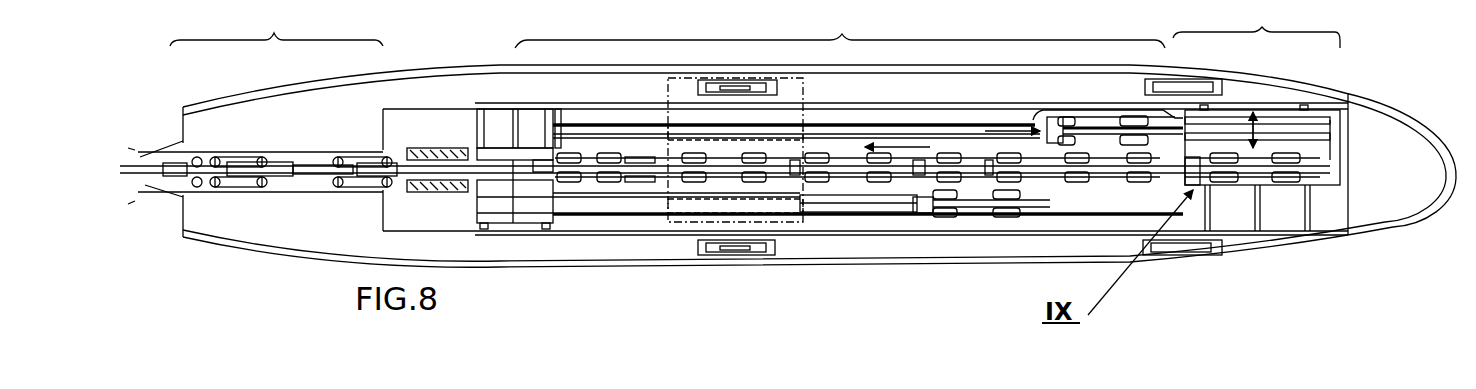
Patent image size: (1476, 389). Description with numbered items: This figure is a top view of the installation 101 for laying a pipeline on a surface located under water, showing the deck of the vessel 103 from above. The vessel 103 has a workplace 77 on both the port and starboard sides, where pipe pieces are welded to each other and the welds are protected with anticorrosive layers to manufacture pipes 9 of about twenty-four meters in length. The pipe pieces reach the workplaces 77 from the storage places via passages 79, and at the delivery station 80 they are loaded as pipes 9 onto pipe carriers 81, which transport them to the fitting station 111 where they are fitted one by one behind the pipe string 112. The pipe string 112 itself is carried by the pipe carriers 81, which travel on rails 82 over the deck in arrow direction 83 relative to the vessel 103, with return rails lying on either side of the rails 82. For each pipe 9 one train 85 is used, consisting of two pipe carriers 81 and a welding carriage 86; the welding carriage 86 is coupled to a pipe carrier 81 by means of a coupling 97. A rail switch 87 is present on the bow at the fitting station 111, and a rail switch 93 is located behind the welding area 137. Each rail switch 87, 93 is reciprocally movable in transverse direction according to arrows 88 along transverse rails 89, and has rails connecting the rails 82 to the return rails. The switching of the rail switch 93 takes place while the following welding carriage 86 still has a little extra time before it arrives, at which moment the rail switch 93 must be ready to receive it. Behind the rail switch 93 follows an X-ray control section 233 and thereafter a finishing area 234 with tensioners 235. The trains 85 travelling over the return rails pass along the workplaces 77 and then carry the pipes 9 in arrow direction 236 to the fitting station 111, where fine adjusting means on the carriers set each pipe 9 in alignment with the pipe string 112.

The pipe 9 is at (1082, 170).
The workplace 77 is at (806, 96).
The passage 79 is at (780, 86).
The delivery station 80 is at (690, 122).
The pipe carrier 81 is at (607, 153).
The rails 82 is at (644, 155).
The arrow direction 83 is at (893, 145).
The train 85 is at (1118, 120).
The welding carriage 86 is at (548, 158).
The rail switch 87 is at (1276, 118).
The arrows 88 is at (500, 205).
The transverse rails 89 is at (505, 125).
The rail switch 93 is at (513, 180).
The coupling 97 is at (1345, 160).
The installation 101 is at (596, 62).
The vessel 103 is at (440, 70).
The fitting station 111 is at (1256, 24).
The pipe string 112 is at (317, 165).
The welding area 137 is at (840, 28).
The X-ray control section 233 is at (448, 194).
The finishing area 234 is at (276, 26).
The tensioners 235 is at (262, 188).
The arrow direction 236 is at (1030, 138).